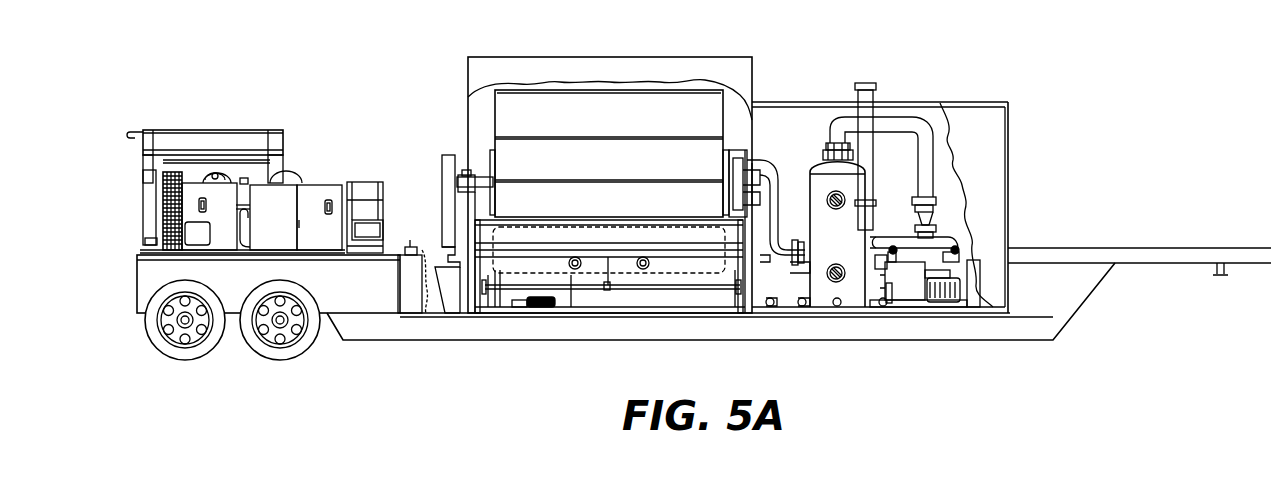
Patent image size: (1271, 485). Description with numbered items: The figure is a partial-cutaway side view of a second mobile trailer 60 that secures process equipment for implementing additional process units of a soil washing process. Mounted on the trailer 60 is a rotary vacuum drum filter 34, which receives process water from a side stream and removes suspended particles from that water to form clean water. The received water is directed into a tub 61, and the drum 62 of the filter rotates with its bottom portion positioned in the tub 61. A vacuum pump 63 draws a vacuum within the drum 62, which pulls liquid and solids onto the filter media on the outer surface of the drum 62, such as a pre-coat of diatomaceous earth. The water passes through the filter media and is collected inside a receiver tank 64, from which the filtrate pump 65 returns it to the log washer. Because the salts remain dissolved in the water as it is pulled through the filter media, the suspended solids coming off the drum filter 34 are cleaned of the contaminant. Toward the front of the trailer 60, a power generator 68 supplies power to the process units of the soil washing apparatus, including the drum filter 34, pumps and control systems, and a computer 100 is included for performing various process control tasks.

The second mobile trailer 60 is at (1046, 97).
The power generator 68 is at (143, 210).
The computer 100 is at (368, 212).
The rotary vacuum drum filter 34 is at (612, 57).
The drum 62 is at (677, 92).
The tub 61 is at (678, 300).
The receiver tank 64 is at (805, 160).
The filtrate pump 65 is at (867, 300).
The vacuum pump 63 is at (960, 210).